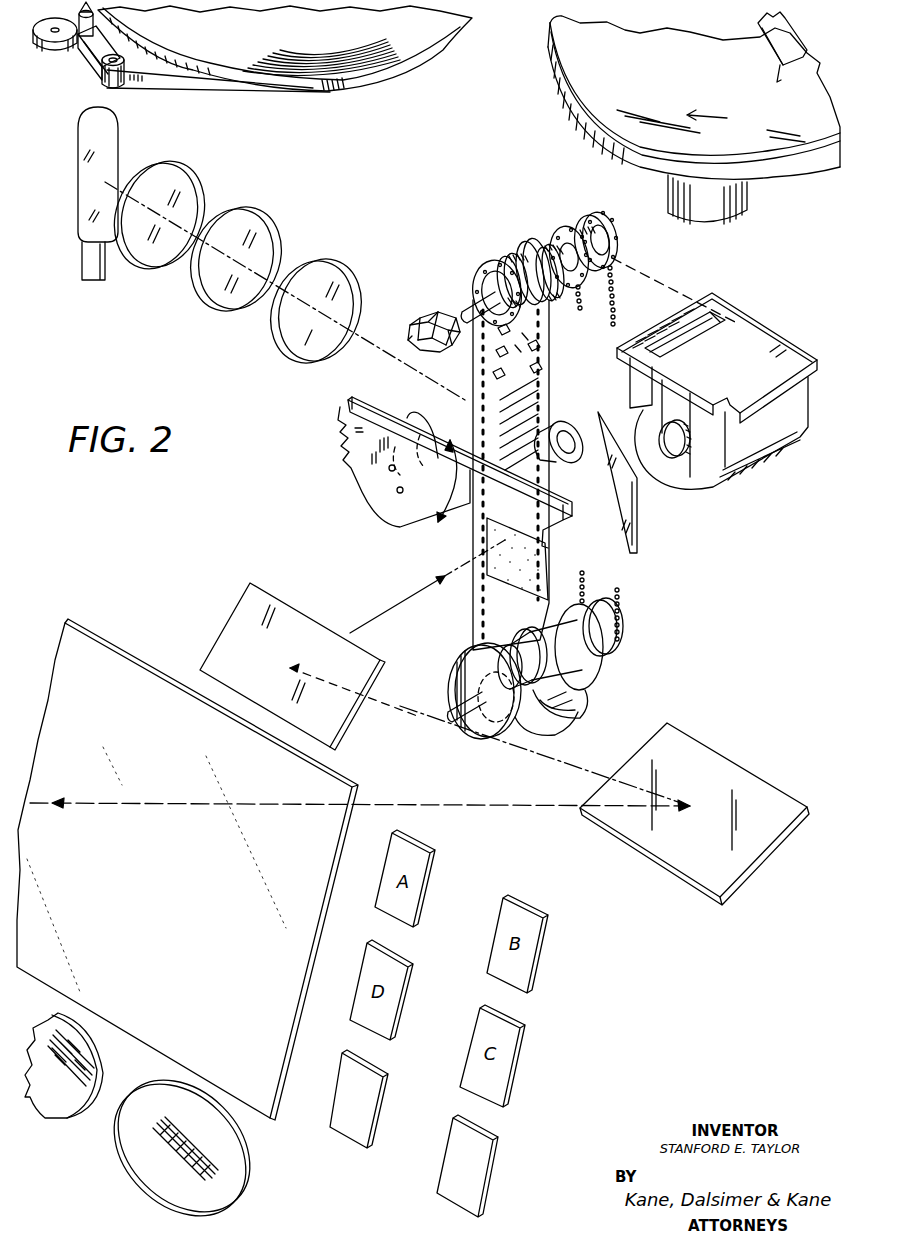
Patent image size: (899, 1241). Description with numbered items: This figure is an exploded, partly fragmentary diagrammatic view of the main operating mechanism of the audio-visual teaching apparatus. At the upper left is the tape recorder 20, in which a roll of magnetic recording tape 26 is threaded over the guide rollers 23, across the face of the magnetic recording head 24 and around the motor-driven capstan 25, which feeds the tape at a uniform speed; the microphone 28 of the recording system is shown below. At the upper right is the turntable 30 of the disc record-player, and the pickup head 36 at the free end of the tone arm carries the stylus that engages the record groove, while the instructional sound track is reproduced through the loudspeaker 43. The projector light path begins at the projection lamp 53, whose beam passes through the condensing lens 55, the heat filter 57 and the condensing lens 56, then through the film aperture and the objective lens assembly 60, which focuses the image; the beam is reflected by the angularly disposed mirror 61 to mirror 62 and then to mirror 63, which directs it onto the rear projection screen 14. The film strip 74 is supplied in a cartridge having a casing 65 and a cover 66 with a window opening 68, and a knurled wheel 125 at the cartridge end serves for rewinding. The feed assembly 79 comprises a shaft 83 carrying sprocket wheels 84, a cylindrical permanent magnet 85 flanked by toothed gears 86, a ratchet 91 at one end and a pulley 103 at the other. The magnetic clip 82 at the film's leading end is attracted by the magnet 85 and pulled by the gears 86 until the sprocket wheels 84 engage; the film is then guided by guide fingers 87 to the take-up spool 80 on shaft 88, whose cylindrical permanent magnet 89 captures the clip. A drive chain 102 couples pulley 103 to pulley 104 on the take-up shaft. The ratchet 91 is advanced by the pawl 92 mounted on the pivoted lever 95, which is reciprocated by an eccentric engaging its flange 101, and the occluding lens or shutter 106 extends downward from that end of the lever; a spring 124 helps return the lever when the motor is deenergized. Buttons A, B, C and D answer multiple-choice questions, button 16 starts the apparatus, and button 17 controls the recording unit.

The rear projection screen 14 is at (325, 832).
The button 16 is at (490, 1153).
The button 17 is at (362, 1110).
The tape recorder 20 is at (313, 110).
The guide rollers 23 is at (118, 88).
The magnetic recording head 24 is at (97, 47).
The capstan 25 is at (48, 53).
The roll of magnetic recording tape 26 is at (383, 72).
The microphone 28 is at (229, 1206).
The turntable 30 is at (787, 173).
The pickup head 36 is at (787, 30).
The loudspeaker 43 is at (50, 1113).
The projection lamp 53 is at (113, 135).
The condensing lens 55 is at (190, 176).
The condensing lens 56 is at (343, 267).
The heat filter 57 is at (263, 220).
The objective lens assembly 60 is at (563, 430).
The mirror 61 is at (634, 538).
The mirror 62 is at (330, 723).
The mirror 63 is at (712, 760).
The casing 65 is at (798, 398).
The cover 66 is at (752, 346).
The window opening 68 is at (713, 314).
The film strip 74 is at (549, 388).
The feed assembly 79 is at (540, 203).
The take-up spool 80 is at (567, 655).
The clip 82 is at (567, 693).
The shaft 83 is at (473, 287).
The sprocket wheels 84 is at (555, 232).
The cylindrical permanent magnet 85 is at (551, 298).
The toothed gears 86 is at (527, 240).
The guide fingers 87 is at (560, 707).
The shaft 88 is at (448, 697).
The cylindrical permanent magnet 89 is at (530, 637).
The ratchet 91 is at (417, 332).
The pawl 92 is at (417, 434).
The lever 95 is at (375, 495).
The flange 101 is at (572, 525).
The drive chain 102 is at (638, 268).
The pulley 103 is at (618, 243).
The pulley 104 is at (613, 645).
The occluding lens or shutter 106 is at (497, 539).
The spring 124 is at (338, 462).
The knurled wheel 125 is at (678, 455).